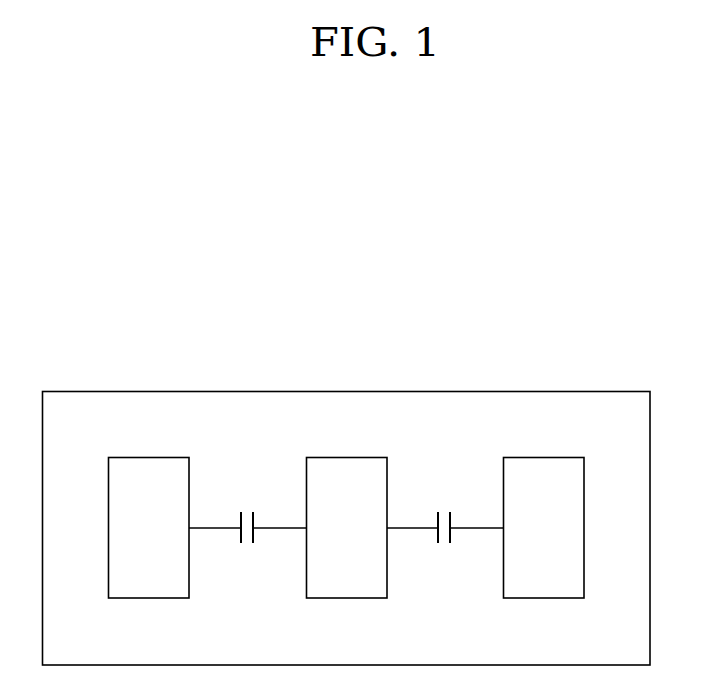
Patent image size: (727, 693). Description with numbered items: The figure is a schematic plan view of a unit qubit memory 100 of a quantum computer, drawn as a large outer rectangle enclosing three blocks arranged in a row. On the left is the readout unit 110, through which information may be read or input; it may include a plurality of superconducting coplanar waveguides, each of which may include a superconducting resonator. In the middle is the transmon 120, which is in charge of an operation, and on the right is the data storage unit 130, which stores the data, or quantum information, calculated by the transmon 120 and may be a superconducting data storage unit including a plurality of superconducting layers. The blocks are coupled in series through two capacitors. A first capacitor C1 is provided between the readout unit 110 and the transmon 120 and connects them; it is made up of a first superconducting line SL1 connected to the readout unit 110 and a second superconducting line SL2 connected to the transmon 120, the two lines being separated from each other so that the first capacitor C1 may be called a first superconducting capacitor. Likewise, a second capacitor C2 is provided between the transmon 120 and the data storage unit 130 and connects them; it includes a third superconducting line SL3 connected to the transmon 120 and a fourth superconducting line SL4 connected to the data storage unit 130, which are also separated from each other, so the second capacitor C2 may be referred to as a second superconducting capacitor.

The unit qubit memory 100 is at (558, 391).
The readout unit 110 is at (153, 457).
The transmon 120 is at (350, 457).
The data storage unit 130 is at (546, 457).
The first capacitor C1 is at (250, 508).
The second capacitor C2 is at (447, 508).
The first superconducting line SL1 is at (218, 528).
The second superconducting line SL2 is at (275, 528).
The third superconducting line SL3 is at (412, 528).
The fourth superconducting line SL4 is at (475, 528).